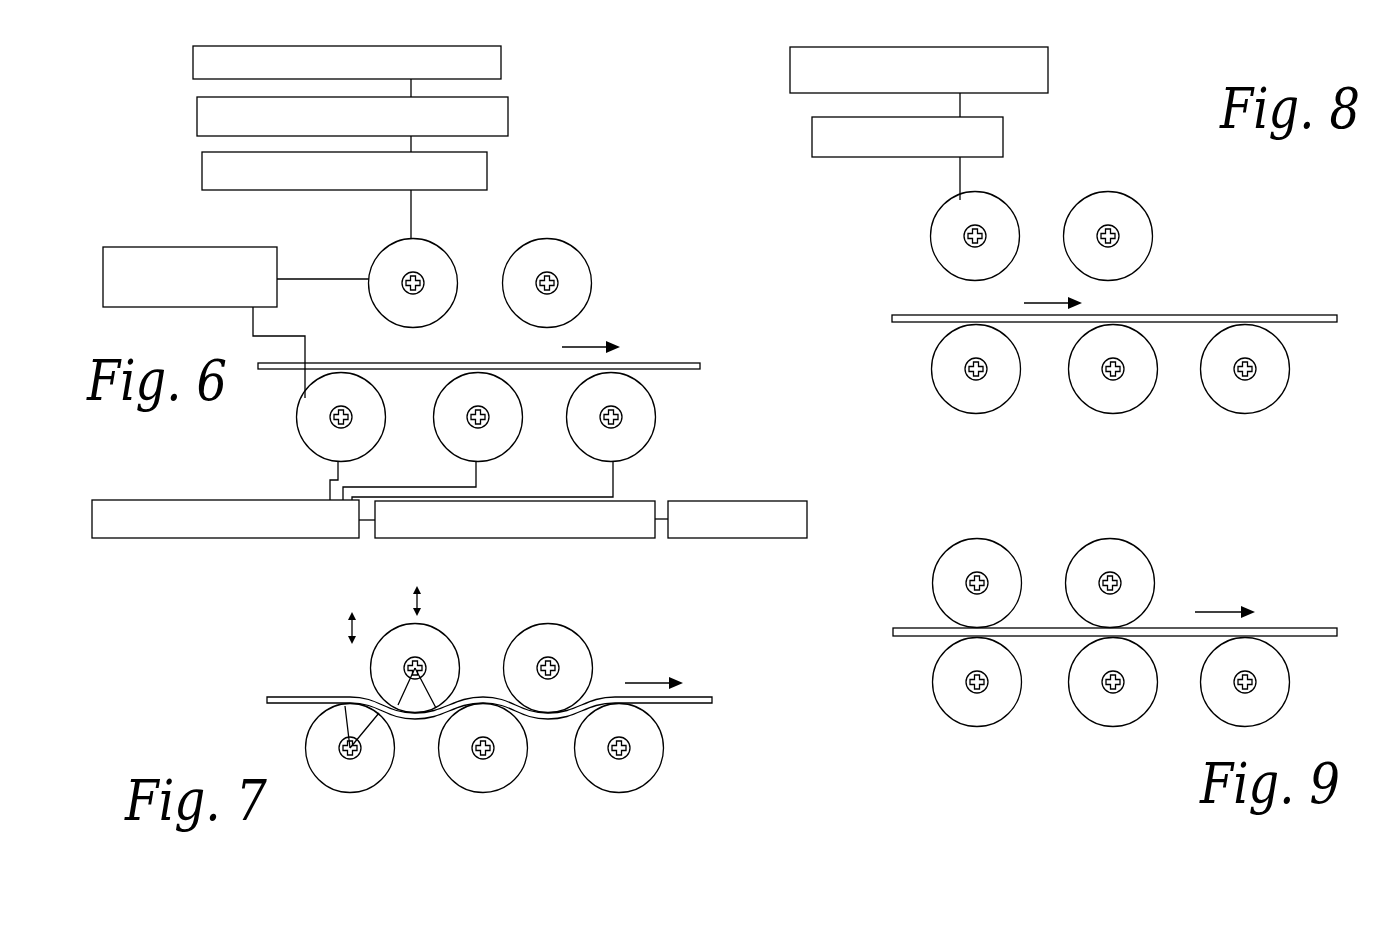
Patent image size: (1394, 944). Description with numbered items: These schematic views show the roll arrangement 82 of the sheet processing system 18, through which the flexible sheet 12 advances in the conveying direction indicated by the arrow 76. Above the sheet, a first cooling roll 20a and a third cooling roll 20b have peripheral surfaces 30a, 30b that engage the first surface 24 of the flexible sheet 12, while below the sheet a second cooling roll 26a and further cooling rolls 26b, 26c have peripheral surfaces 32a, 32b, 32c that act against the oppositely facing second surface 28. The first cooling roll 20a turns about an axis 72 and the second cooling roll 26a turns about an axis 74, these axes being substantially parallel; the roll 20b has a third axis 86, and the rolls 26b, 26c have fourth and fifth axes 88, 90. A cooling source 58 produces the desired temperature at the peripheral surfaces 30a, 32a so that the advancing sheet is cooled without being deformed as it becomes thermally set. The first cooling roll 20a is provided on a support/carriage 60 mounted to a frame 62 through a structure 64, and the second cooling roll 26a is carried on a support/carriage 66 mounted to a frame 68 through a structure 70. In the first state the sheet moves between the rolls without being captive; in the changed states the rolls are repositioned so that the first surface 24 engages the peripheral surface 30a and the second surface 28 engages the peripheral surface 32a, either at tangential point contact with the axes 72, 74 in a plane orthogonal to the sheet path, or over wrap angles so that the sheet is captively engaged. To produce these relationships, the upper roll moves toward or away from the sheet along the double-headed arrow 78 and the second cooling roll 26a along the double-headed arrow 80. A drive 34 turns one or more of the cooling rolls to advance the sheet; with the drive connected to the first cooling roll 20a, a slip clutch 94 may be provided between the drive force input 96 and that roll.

In FIG. 6, the flexible sheet 12 is at (690, 362).
In FIG. 7, the flexible sheet 12 is at (699, 695).
In FIG. 8, the flexible sheet 12 is at (1330, 312).
In FIG. 9, the flexible sheet 12 is at (1327, 628).
In FIG. 6, the sheet processing system 18 is at (568, 180).
In FIG. 7, the sheet processing system 18 is at (645, 645).
In FIG. 8, the sheet processing system 18 is at (1192, 208).
In FIG. 9, the sheet processing system 18 is at (1190, 557).
In FIG. 6, the first cooling roll 20a is at (438, 244).
In FIG. 7, the first cooling roll 20a is at (372, 660).
In FIG. 8, the first cooling roll 20a is at (1005, 198).
In FIG. 9, the first cooling roll 20a is at (1006, 548).
In FIG. 6, the third cooling roll 20b is at (577, 248).
In FIG. 7, the third cooling roll 20b is at (548, 668).
In FIG. 8, the third cooling roll 20b is at (1136, 197).
In FIG. 9, the third cooling roll 20b is at (1139, 546).
In FIG. 6, the first surface 24 is at (433, 362).
In FIG. 7, the first surface 24 is at (480, 697).
In FIG. 9, the first surface 24 is at (1045, 628).
In FIG. 6, the second cooling roll 26a is at (303, 443).
In FIG. 7, the second cooling roll 26a is at (316, 778).
In FIG. 8, the second cooling roll 26a is at (943, 397).
In FIG. 9, the second cooling roll 26a is at (941, 712).
In FIG. 6, the third cooling roll 26b is at (445, 445).
In FIG. 7, the third cooling roll 26b is at (448, 780).
In FIG. 8, the third cooling roll 26b is at (1078, 397).
In FIG. 9, the third cooling roll 26b is at (1079, 712).
In FIG. 6, the fourth cooling roll 26c is at (660, 441).
In FIG. 7, the fourth cooling roll 26c is at (664, 737).
In FIG. 8, the fourth cooling roll 26c is at (1212, 397).
In FIG. 9, the fourth cooling roll 26c is at (1208, 708).
In FIG. 6, the second surface 28 is at (405, 370).
In FIG. 7, the second surface 28 is at (298, 707).
In FIG. 9, the second surface 28 is at (1043, 637).
In FIG. 6, the peripheral surface 30a is at (380, 252).
In FIG. 7, the peripheral surface 30a is at (452, 642).
In FIG. 9, the peripheral surface 30a is at (976, 538).
In FIG. 6, the peripheral surface 30b is at (585, 258).
In FIG. 6, the second peripheral surface 32a is at (296, 417).
In FIG. 7, the second peripheral surface 32a is at (307, 750).
In FIG. 9, the second peripheral surface 32a is at (933, 683).
In FIG. 6, the peripheral surface 32b is at (523, 417).
In FIG. 6, the peripheral surface 32c is at (656, 417).
In FIG. 8, the drive 34 is at (1199, 98).
In FIG. 6, the cooling source 58 is at (190, 277).
In FIG. 6, the support/carriage 60 is at (344, 171).
In FIG. 6, the frame 62 is at (347, 62).
In FIG. 6, the structure 64 is at (352, 116).
In FIG. 6, the support/carriage 66 is at (225, 519).
In FIG. 6, the frame 68 is at (737, 519).
In FIG. 6, the structure 70 is at (515, 519).
In FIG. 6, the axis 72 is at (412, 283).
In FIG. 9, the axis 72 is at (977, 583).
In FIG. 6, the axis 74 is at (342, 417).
In FIG. 7, the axis 74 is at (350, 748).
In FIG. 9, the axis 74 is at (977, 682).
In FIG. 6, the arrow 76 is at (576, 343).
In FIG. 7, the arrow 76 is at (640, 681).
In FIG. 8, the arrow 76 is at (1052, 302).
In FIG. 9, the arrow 76 is at (1223, 610).
In FIG. 7, the double-headed arrow 78 is at (412, 603).
In FIG. 7, the double-headed arrow 80 is at (344, 624).
In FIG. 6, the roll arrangement 82 is at (645, 262).
In FIG. 7, the roll arrangement 82 is at (554, 773).
In FIG. 8, the roll arrangement 82 is at (1113, 143).
In FIG. 9, the roll arrangement 82 is at (1092, 757).
In FIG. 6, the third axis 86 is at (547, 283).
In FIG. 7, the third axis 86 is at (548, 668).
In FIG. 9, the third axis 86 is at (1110, 583).
In FIG. 6, the fourth axis 88 is at (478, 417).
In FIG. 7, the fourth axis 88 is at (483, 748).
In FIG. 9, the fourth axis 88 is at (1113, 682).
In FIG. 6, the fifth axis 90 is at (611, 417).
In FIG. 7, the fifth axis 90 is at (658, 780).
In FIG. 8, the slip clutch 94 is at (907, 137).
In FIG. 8, the drive force input 96 is at (919, 70).